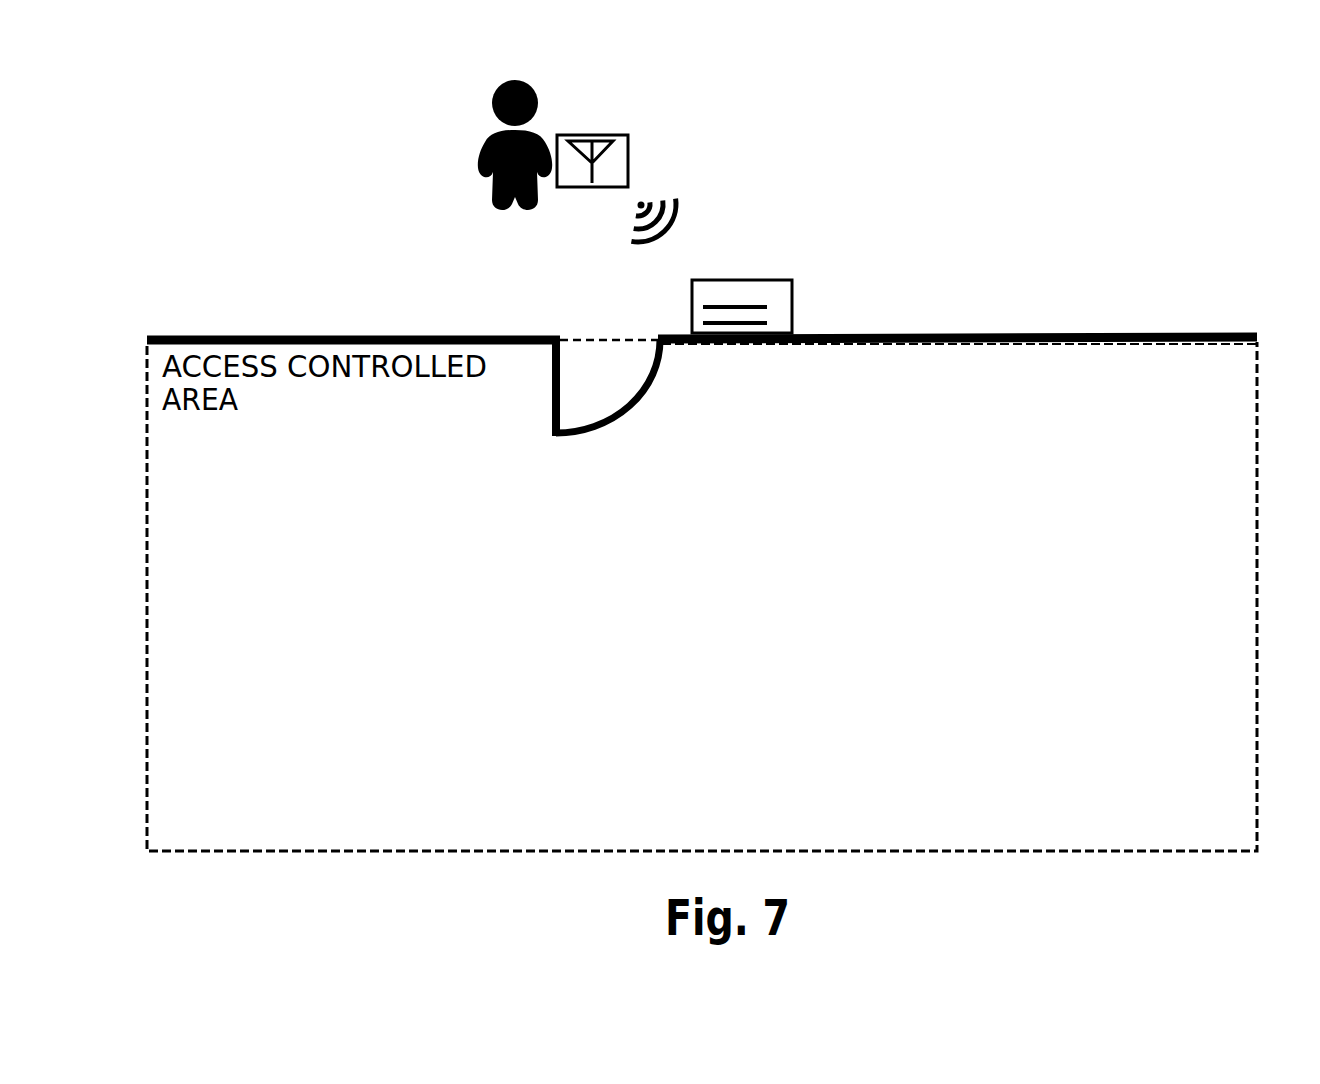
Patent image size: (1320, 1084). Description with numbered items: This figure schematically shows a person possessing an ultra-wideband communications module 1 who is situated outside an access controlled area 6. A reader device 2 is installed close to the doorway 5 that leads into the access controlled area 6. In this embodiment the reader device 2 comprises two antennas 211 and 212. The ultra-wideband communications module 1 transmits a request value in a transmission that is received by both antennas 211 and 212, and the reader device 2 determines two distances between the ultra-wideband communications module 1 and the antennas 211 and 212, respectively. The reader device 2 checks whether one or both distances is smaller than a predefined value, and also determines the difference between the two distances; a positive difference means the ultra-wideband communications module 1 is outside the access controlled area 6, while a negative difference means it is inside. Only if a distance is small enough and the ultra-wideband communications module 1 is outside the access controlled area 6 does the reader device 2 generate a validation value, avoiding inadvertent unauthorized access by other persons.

The ultra-wideband communications module 1 is at (622, 142).
The reader device 2 is at (712, 291).
The antenna 211 is at (743, 307).
The antenna 212 is at (760, 323).
The doorway 5 is at (598, 352).
The access controlled area 6 is at (288, 355).